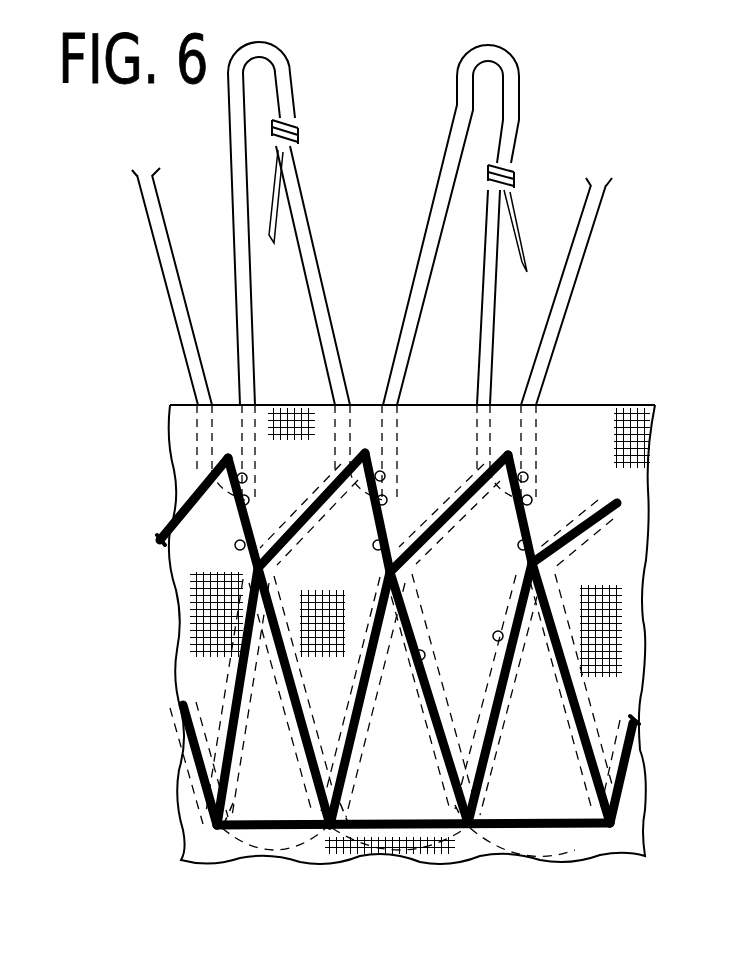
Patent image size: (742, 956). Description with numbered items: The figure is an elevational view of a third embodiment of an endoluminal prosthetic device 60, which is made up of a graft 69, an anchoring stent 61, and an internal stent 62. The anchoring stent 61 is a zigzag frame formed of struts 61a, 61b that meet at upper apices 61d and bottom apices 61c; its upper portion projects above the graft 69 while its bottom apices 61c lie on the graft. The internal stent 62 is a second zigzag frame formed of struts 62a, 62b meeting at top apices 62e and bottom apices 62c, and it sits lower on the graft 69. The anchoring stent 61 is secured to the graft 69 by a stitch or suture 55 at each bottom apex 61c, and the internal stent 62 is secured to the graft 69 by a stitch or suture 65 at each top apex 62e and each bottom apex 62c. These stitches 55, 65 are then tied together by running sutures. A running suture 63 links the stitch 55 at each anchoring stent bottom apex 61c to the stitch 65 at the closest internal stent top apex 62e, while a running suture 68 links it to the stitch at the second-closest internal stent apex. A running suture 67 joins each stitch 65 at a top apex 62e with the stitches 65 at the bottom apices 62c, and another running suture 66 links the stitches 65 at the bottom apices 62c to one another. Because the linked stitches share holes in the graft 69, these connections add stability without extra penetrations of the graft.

The endoluminal prosthetic device 60 is at (673, 843).
The anchoring stent 61 is at (518, 286).
The strut 61a is at (312, 203).
The strut 61b is at (413, 278).
The bottom apex 61c is at (205, 455).
The apex 61d is at (296, 46).
The stitch or suture 55 is at (248, 472).
The internal stent 62 is at (500, 752).
The strut 62a is at (426, 655).
The strut 62b is at (496, 638).
The bottom apex 62c is at (262, 832).
The top apex 62e is at (282, 568).
The running suture 63 is at (374, 532).
The stitch or suture 65 is at (250, 556).
The running suture 66 is at (270, 826).
The running suture 67 is at (398, 680).
The running suture 68 is at (297, 530).
The graft 69 is at (297, 404).